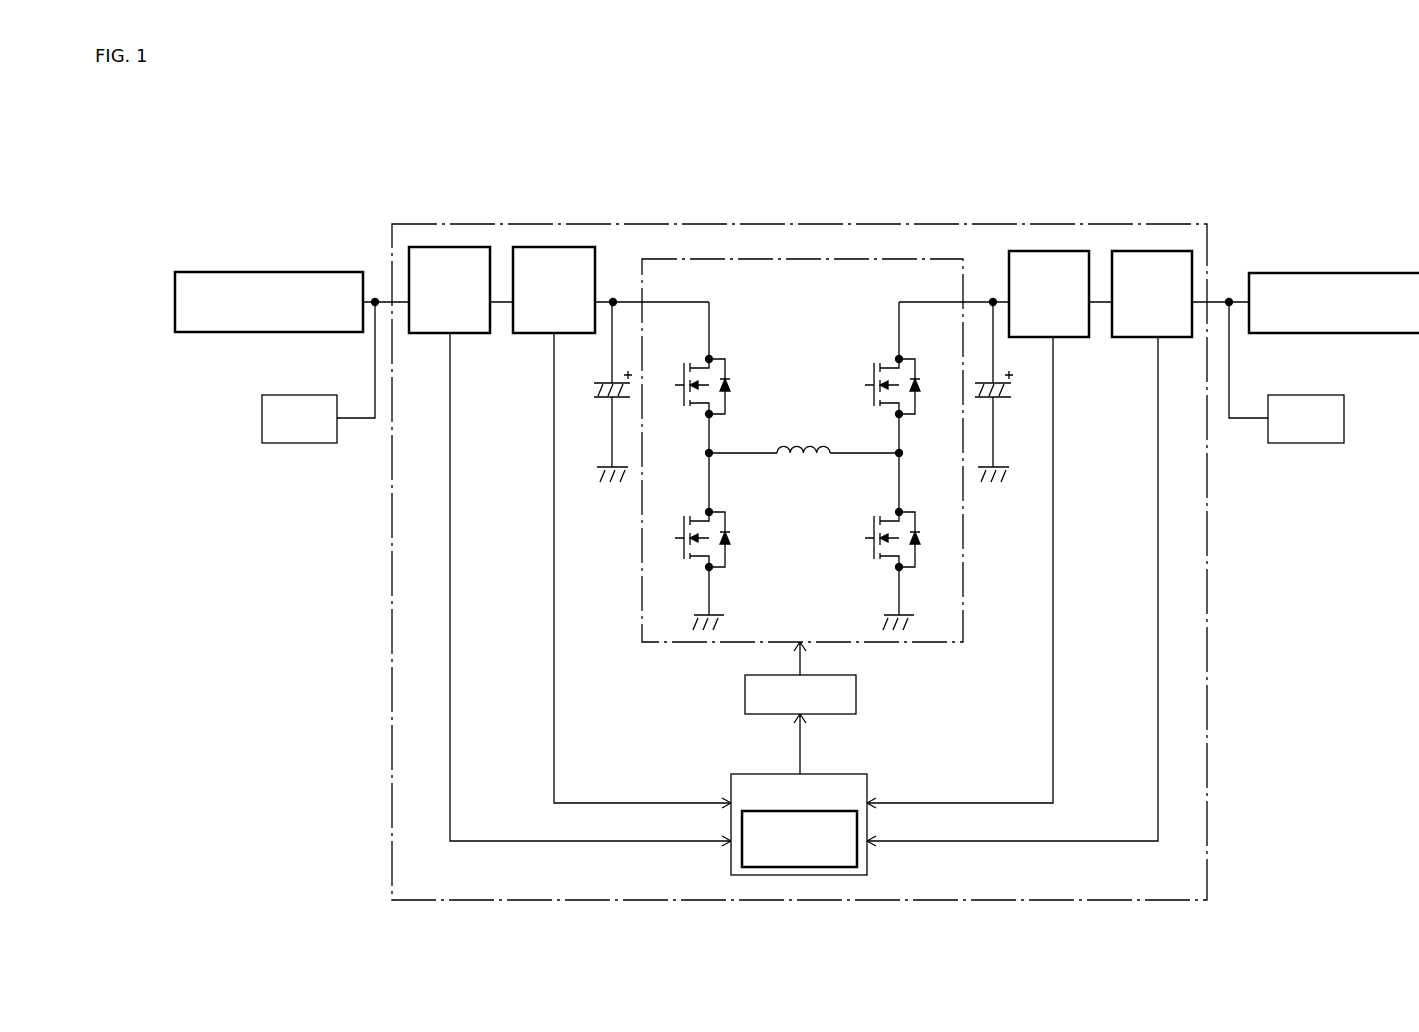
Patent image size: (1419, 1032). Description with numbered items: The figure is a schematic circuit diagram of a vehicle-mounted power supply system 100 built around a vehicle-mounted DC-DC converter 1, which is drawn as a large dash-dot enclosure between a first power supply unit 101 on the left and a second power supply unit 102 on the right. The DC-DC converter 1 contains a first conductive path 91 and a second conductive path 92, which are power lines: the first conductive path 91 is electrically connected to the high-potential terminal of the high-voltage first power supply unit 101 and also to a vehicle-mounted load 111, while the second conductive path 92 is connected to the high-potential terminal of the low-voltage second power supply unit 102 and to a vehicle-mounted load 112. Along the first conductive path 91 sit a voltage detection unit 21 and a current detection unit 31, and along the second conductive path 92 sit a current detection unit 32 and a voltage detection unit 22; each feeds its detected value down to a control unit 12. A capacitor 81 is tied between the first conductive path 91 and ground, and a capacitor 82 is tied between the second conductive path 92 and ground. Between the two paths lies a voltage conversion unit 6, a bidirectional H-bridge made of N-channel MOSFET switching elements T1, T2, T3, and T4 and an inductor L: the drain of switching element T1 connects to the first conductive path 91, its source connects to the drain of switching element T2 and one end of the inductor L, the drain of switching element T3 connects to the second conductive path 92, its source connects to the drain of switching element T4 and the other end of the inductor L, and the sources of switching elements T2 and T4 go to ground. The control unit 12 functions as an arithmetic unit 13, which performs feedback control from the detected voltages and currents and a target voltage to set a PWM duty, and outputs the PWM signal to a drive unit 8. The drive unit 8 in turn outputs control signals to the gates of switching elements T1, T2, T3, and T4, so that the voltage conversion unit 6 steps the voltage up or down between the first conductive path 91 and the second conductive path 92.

The vehicle-mounted power supply system 100 is at (1252, 196).
The vehicle-mounted DC-DC converter 1 is at (1140, 225).
The voltage conversion unit 6 is at (866, 259).
The drive unit 8 is at (856, 689).
The control unit 12 is at (843, 774).
The arithmetic unit 13 is at (857, 851).
The voltage detection unit 21 is at (451, 247).
The voltage detection unit 22 is at (1190, 252).
The current detection unit 31 is at (555, 247).
The current detection unit 32 is at (1050, 251).
The capacitor 81 is at (605, 398).
The capacitor 82 is at (998, 398).
The first conductive path 91 is at (625, 300).
The second conductive path 92 is at (986, 300).
The first power supply unit 101 is at (266, 333).
The second power supply unit 102 is at (1322, 334).
The vehicle-mounted load 111 is at (291, 443).
The vehicle-mounted load 112 is at (1309, 443).
The switching element T1 is at (684, 368).
The switching element T2 is at (684, 525).
The switching element T3 is at (874, 382).
The switching element T4 is at (874, 538).
The inductor L is at (797, 443).